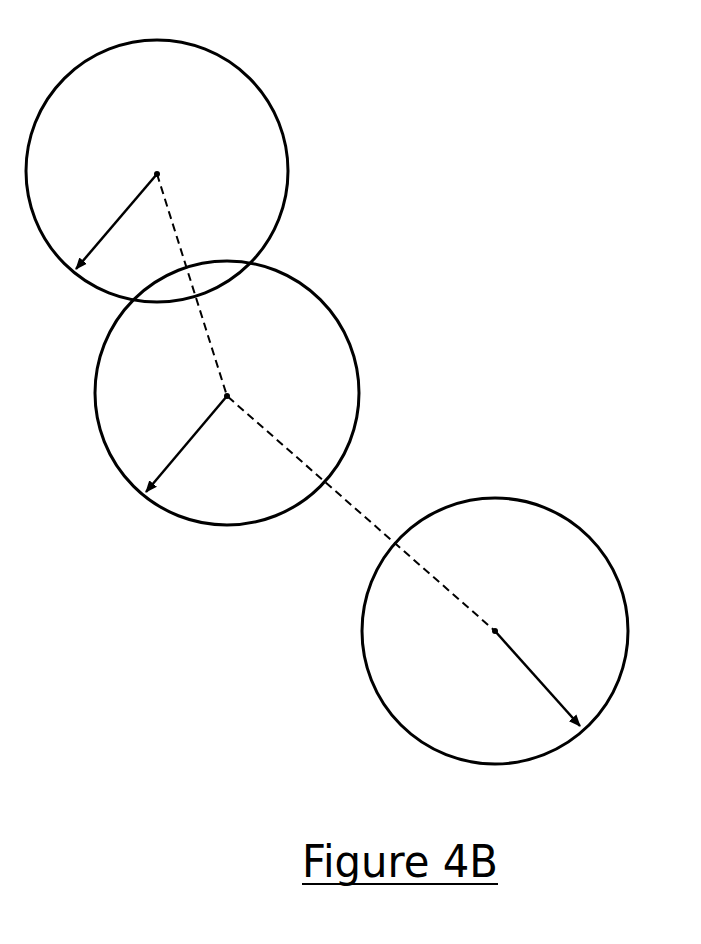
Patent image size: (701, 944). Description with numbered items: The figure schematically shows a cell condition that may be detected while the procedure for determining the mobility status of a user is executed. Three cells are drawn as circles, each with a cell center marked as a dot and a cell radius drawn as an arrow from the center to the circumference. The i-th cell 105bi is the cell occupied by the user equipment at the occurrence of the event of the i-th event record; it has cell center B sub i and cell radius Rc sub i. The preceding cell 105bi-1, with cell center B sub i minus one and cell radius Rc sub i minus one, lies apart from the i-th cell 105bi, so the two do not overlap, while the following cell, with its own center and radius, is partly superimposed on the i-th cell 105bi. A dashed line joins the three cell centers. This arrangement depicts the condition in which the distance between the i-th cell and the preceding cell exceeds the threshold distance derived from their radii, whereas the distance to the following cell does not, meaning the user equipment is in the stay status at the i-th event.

The i-th cell 105bi is at (338, 320).
The (i-1)-th cell 105bi-1 is at (588, 532).